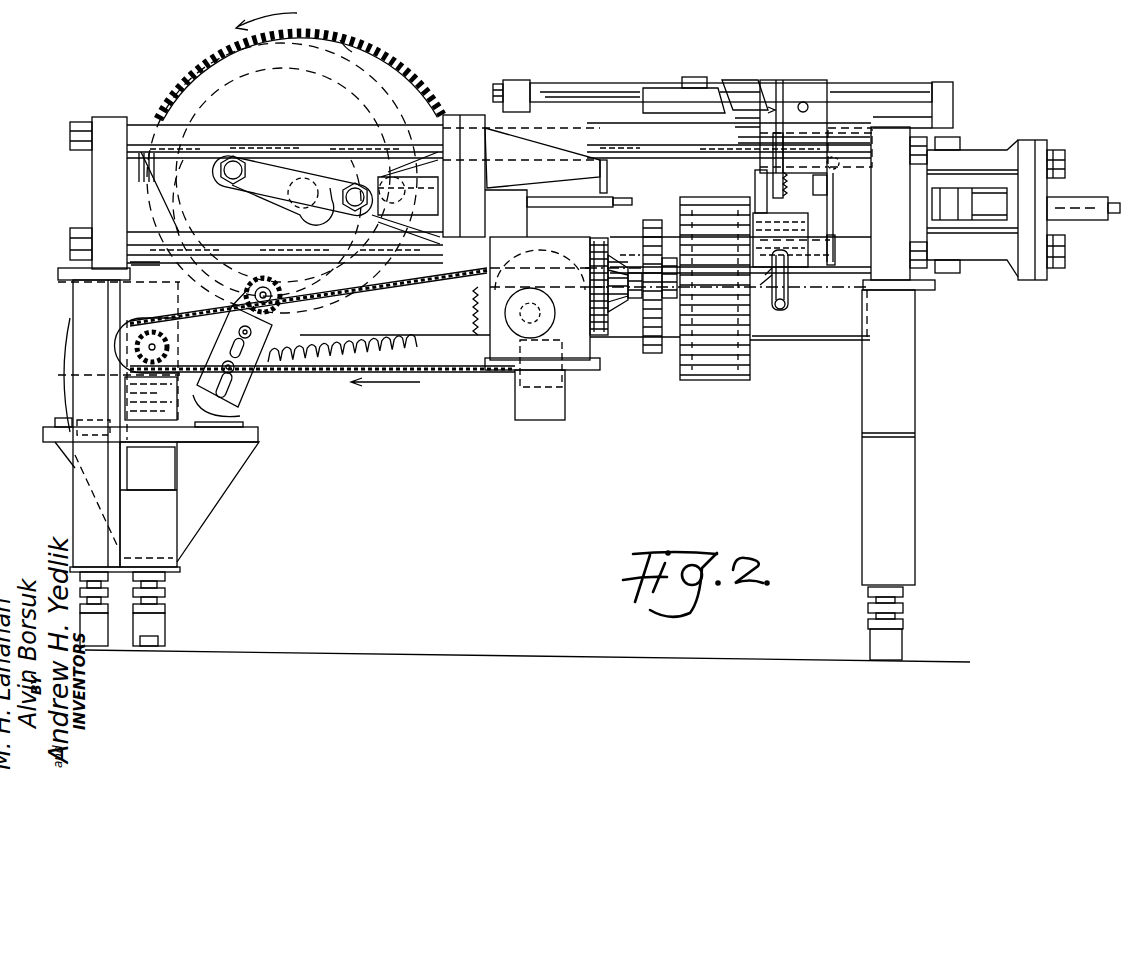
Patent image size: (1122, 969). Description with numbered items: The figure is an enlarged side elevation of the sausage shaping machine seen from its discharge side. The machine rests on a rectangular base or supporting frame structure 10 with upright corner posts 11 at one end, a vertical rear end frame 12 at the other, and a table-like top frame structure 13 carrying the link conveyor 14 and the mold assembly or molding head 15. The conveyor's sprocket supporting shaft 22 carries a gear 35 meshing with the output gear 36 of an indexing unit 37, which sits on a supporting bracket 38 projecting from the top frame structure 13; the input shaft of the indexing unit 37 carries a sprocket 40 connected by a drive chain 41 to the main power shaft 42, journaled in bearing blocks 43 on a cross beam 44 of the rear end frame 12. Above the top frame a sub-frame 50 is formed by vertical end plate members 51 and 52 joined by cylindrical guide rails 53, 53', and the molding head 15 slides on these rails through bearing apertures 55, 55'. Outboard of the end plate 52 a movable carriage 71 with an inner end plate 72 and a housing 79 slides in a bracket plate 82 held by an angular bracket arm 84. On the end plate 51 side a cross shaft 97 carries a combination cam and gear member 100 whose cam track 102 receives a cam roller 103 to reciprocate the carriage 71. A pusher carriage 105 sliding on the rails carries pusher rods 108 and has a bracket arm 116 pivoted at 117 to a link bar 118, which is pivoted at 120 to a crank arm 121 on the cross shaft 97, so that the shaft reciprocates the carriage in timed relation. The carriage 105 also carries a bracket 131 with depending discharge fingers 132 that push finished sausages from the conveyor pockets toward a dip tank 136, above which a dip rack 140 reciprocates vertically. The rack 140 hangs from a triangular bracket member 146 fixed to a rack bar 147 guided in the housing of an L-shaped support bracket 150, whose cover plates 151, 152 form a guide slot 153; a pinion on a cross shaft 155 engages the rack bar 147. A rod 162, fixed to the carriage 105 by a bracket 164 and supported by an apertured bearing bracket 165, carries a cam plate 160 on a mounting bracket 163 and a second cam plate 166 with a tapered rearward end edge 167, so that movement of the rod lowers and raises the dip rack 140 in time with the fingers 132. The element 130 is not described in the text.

The base or supporting frame structure 10 is at (927, 365).
The upright corner posts 11 is at (868, 412).
The rear end frame 12 is at (80, 392).
The top frame structure 13 is at (855, 333).
The link carrying conveyor 14 is at (708, 377).
The mold assembly or molding head 15 is at (753, 183).
The sprocket supporting shaft 22 is at (672, 300).
The gear 35 is at (638, 317).
The output gear 36 is at (653, 353).
The indexing unit 37 is at (577, 319).
The supporting bracket 38 is at (525, 402).
The sprocket 40 is at (460, 340).
The drive chain 41 is at (350, 300).
The main power shaft 42 is at (150, 347).
The bearing blocks 43 is at (247, 420).
The cross beam 44 is at (178, 488).
The sub-frame 50 is at (80, 183).
The end plate member 51 is at (112, 125).
The end plate member 52 is at (893, 205).
The guide rail 53 is at (499, 137).
The guide rail 53' is at (499, 279).
The bearing aperture 55 is at (838, 217).
The bearing aperture 55' is at (845, 244).
The movable frame or carriage 71 is at (969, 147).
The inner end plate 72 is at (953, 275).
The housing forming member 79 is at (1080, 197).
The bracket plate 82 is at (1038, 143).
The angular bracket arm 84 is at (1017, 273).
The cross shaft 97 is at (330, 181).
The combination cam and gear member 100 is at (400, 64).
The cam track 102 is at (346, 44).
The cam roller 103 is at (406, 192).
The carriage forming member 105 is at (485, 110).
The pusher rods 108 is at (563, 203).
The bracket arm 116 is at (432, 216).
The pivot connection 117 is at (360, 205).
The link bar 118 is at (258, 188).
The pivot 120 is at (226, 181).
The crank arm 121 is at (272, 205).
The slide 130 is at (734, 124).
The bracket 131 is at (543, 152).
The discharge fingers 132 is at (608, 184).
The tank 136 is at (797, 262).
The dip frame or rack 140 is at (784, 210).
The bracket member 146 is at (786, 160).
The rack bar 147 is at (781, 90).
The L-shaped support bracket 150 is at (858, 137).
The cover plate 151 is at (830, 192).
The cover plate 152 is at (737, 140).
The guide slot 153 is at (767, 110).
The cross shaft 155 is at (806, 102).
The cam plate 160 is at (655, 87).
The movable bar or rod 162 is at (581, 84).
The mounting bracket 163 is at (700, 77).
The bracket 164 is at (524, 84).
The apertured bearing bracket 165 is at (947, 88).
The second cam plate 166 is at (783, 80).
The rearward end edge 167 is at (752, 78).